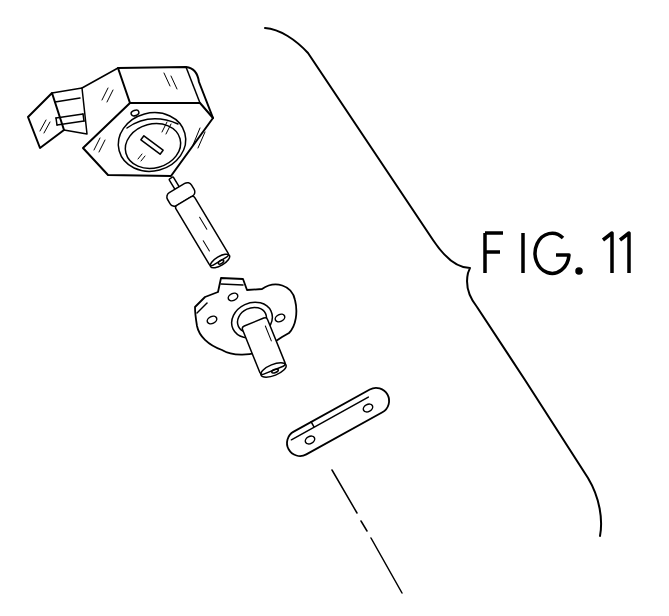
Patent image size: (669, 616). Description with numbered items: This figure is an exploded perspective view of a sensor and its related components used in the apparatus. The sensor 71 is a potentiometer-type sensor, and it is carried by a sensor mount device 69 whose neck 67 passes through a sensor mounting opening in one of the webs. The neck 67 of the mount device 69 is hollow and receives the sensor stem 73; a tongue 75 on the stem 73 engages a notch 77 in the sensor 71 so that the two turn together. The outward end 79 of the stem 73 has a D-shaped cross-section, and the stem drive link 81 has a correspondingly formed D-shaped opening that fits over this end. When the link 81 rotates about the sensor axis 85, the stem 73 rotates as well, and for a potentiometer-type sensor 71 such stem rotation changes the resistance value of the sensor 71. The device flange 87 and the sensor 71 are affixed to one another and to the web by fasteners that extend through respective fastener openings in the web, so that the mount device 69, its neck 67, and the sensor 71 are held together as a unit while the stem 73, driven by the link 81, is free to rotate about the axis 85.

The sensor 71 is at (202, 82).
The sensor stem 73 is at (212, 218).
The tongue 75 is at (180, 183).
The notch 77 is at (150, 150).
The outward end 79 is at (207, 258).
The device flange 87 is at (272, 280).
The sensor mount device 69 is at (222, 341).
The neck 67 is at (290, 345).
The stem drive link 81 is at (345, 430).
The sensor axis 85 is at (379, 553).